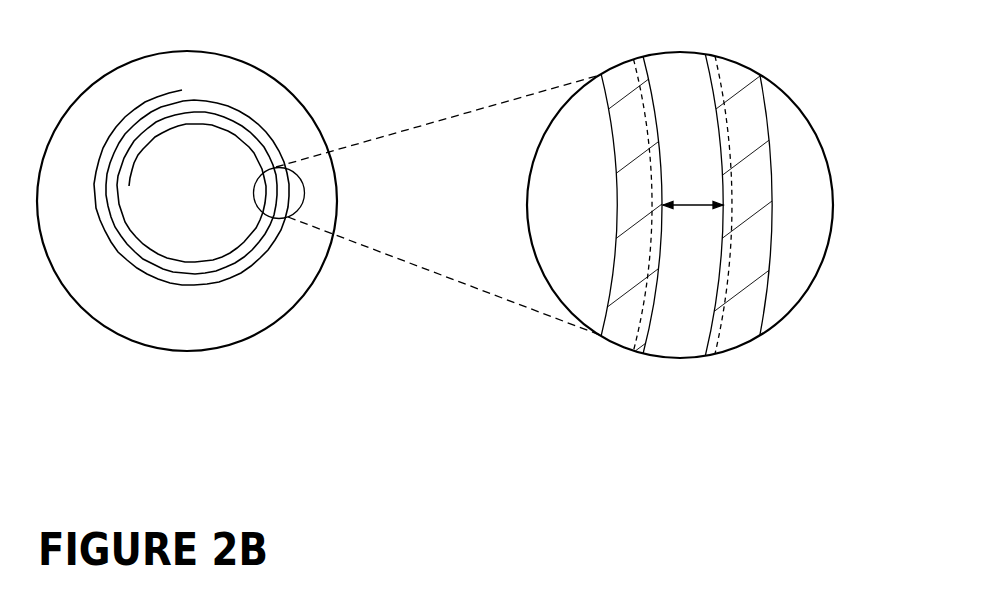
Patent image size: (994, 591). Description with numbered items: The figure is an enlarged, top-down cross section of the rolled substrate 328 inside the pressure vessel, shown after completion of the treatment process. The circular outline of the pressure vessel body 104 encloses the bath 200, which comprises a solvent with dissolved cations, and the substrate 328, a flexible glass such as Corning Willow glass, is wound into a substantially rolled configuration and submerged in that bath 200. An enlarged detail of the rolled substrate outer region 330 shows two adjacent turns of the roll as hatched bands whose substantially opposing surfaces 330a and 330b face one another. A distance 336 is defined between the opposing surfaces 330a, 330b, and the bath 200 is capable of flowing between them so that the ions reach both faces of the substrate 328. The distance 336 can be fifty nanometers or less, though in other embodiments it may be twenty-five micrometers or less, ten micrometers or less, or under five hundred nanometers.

The pressure vessel body 104 is at (295, 98).
The bath 200 is at (556, 210).
The substrate 328 is at (163, 283).
The rolled substrate outer region 330 is at (639, 58).
The first opposing surface 330a is at (643, 80).
The second opposing surface 330b is at (712, 78).
The distance 336 is at (692, 207).